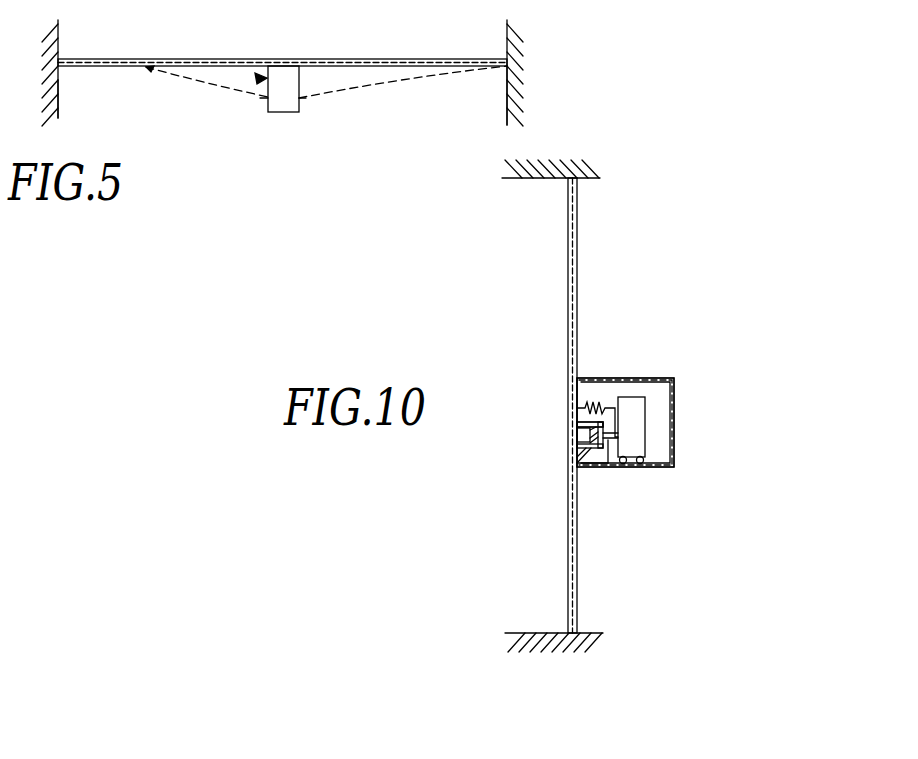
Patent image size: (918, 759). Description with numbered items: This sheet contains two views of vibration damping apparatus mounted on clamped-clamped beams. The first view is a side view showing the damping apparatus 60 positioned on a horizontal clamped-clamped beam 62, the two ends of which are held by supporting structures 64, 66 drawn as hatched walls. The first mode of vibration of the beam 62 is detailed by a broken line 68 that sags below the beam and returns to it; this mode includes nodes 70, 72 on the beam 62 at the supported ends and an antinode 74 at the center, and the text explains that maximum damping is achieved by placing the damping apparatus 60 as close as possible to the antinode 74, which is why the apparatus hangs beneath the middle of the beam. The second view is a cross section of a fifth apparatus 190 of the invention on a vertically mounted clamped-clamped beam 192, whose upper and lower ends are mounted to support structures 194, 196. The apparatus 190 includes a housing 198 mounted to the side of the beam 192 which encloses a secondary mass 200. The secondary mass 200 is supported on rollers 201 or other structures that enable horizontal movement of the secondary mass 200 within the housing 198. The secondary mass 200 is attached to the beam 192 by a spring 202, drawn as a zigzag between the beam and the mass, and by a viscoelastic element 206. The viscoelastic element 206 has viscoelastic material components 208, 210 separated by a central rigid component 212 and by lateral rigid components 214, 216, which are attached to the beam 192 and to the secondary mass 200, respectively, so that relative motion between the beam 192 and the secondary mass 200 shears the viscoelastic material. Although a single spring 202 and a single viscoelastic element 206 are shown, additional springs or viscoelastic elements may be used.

In FIG. 5, the damping apparatus 60 is at (258, 80).
In FIG. 5, the clamped-clamped beam 62 is at (345, 59).
In FIG. 5, the supporting structure 64 is at (58, 62).
In FIG. 5, the supporting structure 66 is at (507, 37).
In FIG. 5, the broken line 68 is at (357, 85).
In FIG. 5, the node 70 is at (506, 67).
In FIG. 5, the node 72 is at (58, 85).
In FIG. 5, the antinode 74 is at (289, 100).
In FIG. 10, the apparatus 190 is at (662, 378).
In FIG. 10, the clamped-clamped beam 192 is at (568, 258).
In FIG. 10, the support structure 194 is at (527, 180).
In FIG. 10, the support structure 196 is at (537, 631).
In FIG. 10, the housing 198 is at (677, 390).
In FIG. 10, the secondary mass 200 is at (647, 437).
In FIG. 10, the rollers 201 is at (632, 468).
In FIG. 10, the spring 202 is at (590, 404).
In FIG. 10, the viscoelastic element 206 is at (592, 466).
In FIG. 10, the viscoelastic material component 208 is at (580, 428).
In FIG. 10, the viscoelastic material component 210 is at (580, 440).
In FIG. 10, the central rigid component 212 is at (608, 473).
In FIG. 10, the lateral rigid component 214 is at (572, 465).
In FIG. 10, the lateral rigid component 216 is at (580, 421).